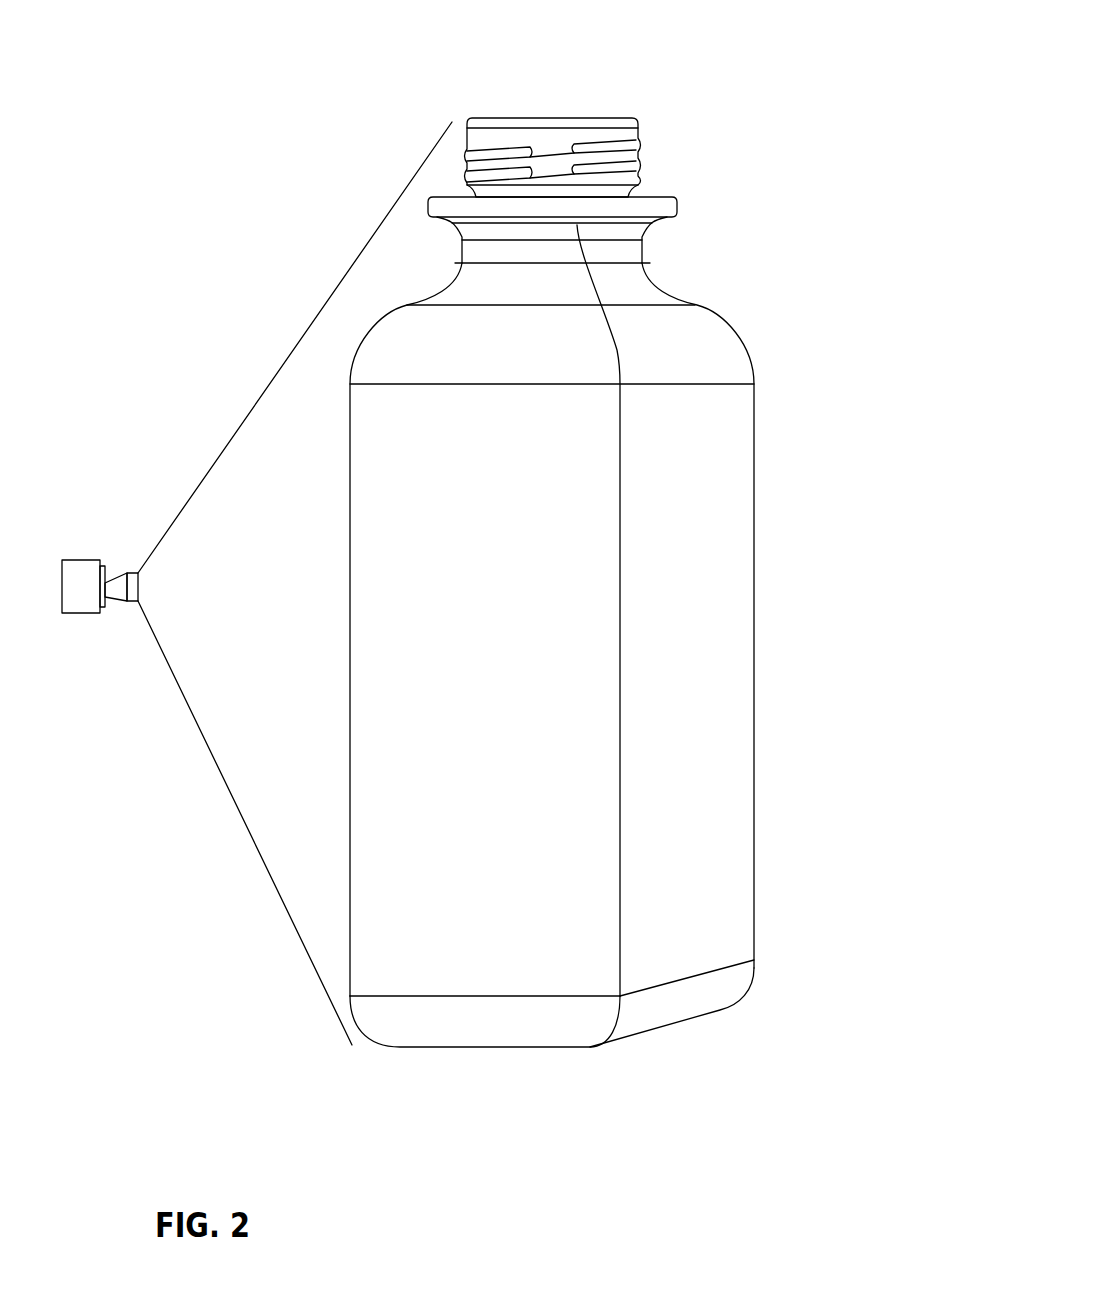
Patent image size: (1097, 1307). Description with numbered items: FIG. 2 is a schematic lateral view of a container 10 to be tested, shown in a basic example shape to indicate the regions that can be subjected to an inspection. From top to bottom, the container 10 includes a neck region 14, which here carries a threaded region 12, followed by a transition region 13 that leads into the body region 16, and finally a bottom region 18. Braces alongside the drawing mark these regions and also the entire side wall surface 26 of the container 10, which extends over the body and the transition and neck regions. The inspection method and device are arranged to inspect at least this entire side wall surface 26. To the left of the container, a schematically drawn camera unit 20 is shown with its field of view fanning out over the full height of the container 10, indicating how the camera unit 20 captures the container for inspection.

The container 10 is at (614, 575).
The threaded region 12 is at (649, 125).
The transition region 13 is at (778, 197).
The neck region 14 is at (658, 179).
The body region 16 is at (780, 243).
The bottom region 18 is at (743, 1070).
The camera unit 20 is at (68, 545).
The side wall surface 26 is at (865, 102).